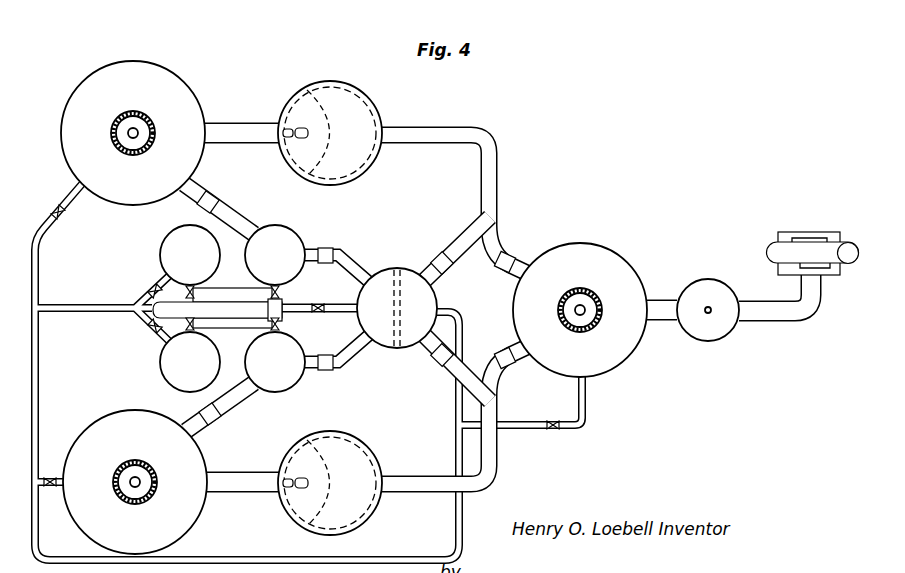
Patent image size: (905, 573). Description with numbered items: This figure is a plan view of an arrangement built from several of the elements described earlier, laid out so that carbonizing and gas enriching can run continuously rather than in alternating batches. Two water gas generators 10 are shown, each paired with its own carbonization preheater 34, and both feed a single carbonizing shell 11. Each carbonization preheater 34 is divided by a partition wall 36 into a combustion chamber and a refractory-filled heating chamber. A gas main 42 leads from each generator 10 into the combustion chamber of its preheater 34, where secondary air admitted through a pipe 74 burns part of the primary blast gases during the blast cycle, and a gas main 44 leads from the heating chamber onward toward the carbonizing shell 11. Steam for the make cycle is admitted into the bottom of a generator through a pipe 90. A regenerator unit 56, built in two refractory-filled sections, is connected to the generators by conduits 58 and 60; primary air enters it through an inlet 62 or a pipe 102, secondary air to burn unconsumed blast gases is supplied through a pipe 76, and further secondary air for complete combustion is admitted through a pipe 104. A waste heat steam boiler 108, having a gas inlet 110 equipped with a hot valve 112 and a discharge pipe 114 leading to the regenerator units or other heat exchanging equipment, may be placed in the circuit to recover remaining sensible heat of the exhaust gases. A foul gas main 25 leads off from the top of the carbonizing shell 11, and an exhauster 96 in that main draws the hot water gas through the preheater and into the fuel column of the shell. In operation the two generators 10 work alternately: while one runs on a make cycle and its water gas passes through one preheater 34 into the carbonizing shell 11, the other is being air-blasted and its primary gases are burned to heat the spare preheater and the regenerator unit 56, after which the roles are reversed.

The water gas generator 10 is at (113, 410).
The carbonizing shell 11 is at (604, 250).
The foul gas main 25 is at (656, 322).
The carbonization preheater 34 is at (373, 512).
The partition wall 36 is at (330, 490).
The gas main 42 is at (231, 492).
The gas main 44 is at (478, 493).
The regenerator unit 56 is at (258, 400).
The conduit 58 is at (240, 405).
The conduit 60 is at (232, 215).
The inlet 62 is at (198, 326).
The pipe 74 is at (296, 312).
The pipe 76 is at (287, 301).
The pipe 90 is at (66, 210).
The exhauster 96 is at (790, 240).
The pipe 102 is at (196, 296).
The pipe 104 is at (288, 330).
The waste heat steam boiler 108 is at (388, 350).
The gas inlet 110 is at (463, 373).
The hot valve 112 is at (440, 364).
The discharge pipe 114 is at (345, 377).